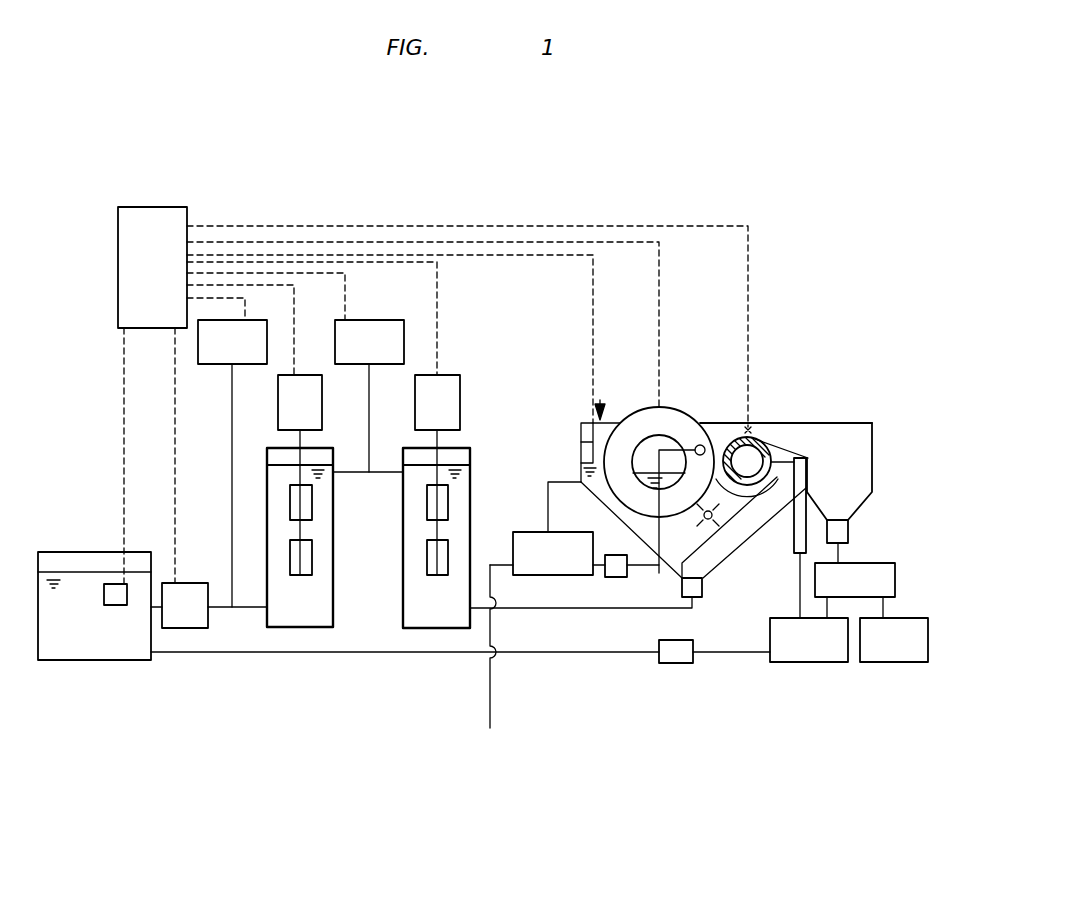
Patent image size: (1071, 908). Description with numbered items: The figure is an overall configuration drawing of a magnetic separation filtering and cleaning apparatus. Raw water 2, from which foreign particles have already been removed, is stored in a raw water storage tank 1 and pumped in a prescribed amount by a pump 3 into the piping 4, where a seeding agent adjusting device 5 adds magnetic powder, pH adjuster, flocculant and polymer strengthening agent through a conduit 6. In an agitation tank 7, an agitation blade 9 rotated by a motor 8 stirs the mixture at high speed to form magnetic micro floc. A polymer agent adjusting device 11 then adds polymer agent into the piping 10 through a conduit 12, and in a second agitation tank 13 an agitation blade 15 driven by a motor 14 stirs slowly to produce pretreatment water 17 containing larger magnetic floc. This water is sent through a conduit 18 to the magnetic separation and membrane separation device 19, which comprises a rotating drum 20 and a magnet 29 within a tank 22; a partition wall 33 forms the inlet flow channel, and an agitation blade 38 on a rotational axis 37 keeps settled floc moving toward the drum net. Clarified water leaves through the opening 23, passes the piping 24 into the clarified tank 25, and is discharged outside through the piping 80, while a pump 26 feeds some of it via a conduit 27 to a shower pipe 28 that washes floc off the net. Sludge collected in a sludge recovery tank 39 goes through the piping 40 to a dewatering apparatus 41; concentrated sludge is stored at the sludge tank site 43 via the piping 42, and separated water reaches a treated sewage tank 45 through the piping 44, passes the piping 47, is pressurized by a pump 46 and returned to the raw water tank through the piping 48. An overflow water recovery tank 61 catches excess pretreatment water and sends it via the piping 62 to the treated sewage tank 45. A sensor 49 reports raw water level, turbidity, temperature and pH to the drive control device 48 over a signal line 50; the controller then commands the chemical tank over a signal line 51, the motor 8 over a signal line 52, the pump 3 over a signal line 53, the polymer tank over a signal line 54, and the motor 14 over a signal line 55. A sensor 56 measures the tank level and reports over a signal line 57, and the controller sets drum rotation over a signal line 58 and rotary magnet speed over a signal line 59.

The raw water storage tank 1 is at (58, 663).
The raw water 2 is at (103, 645).
The pump 3 is at (187, 630).
The piping 4 is at (222, 609).
The seeding agent adjusting device 5 is at (210, 368).
The conduit 6 is at (232, 493).
The agitation tank 7 is at (313, 630).
The motor 8 is at (278, 397).
The agitation blade 9 is at (312, 562).
The piping 10 is at (356, 474).
The polymer agent adjusting device 11 is at (377, 320).
The conduit 12 is at (368, 398).
The agitation tank 13 is at (453, 618).
The motor 14 is at (452, 370).
The agitation blade 15 is at (423, 558).
The pretreatment water 17 is at (432, 603).
The conduit 18 is at (533, 609).
The magnetic separation and membrane separation device 19 is at (600, 400).
The rotating drum 20 is at (665, 407).
The tank 22 is at (580, 430).
The opening 23 is at (646, 434).
The piping 24 is at (548, 497).
The clarified tank 25 is at (513, 540).
The pump 26 is at (614, 578).
The conduit 27 is at (660, 532).
The shower pipe 28 is at (700, 444).
The magnet 29 is at (745, 435).
The partition wall 33 is at (708, 548).
The rotational axis 37 is at (785, 447).
The agitation blade 38 is at (803, 422).
The sludge recovery tank 39 is at (845, 425).
The piping 40 is at (849, 527).
The dewatering apparatus 41 is at (882, 563).
The piping 42 is at (882, 604).
The sludge tank site 43 is at (918, 664).
The piping 44 is at (829, 612).
The treated sewage tank 45 is at (812, 663).
The pump 46 is at (680, 664).
The piping 47 is at (730, 654).
The drive control device 48 is at (165, 206).
The sensor 49 is at (112, 583).
The signal line 50 is at (122, 362).
The signal line 51 is at (208, 297).
The signal line 52 is at (238, 285).
The signal line 53 is at (174, 413).
The signal line 54 is at (302, 273).
The signal line 55 is at (437, 283).
The sensor 56 is at (580, 452).
The signal line 57 is at (594, 281).
The signal line 58 is at (583, 240).
The signal line 59 is at (653, 227).
The overflow water recovery tank 61 is at (797, 508).
The piping 62 is at (796, 583).
The piping 80 is at (491, 713).